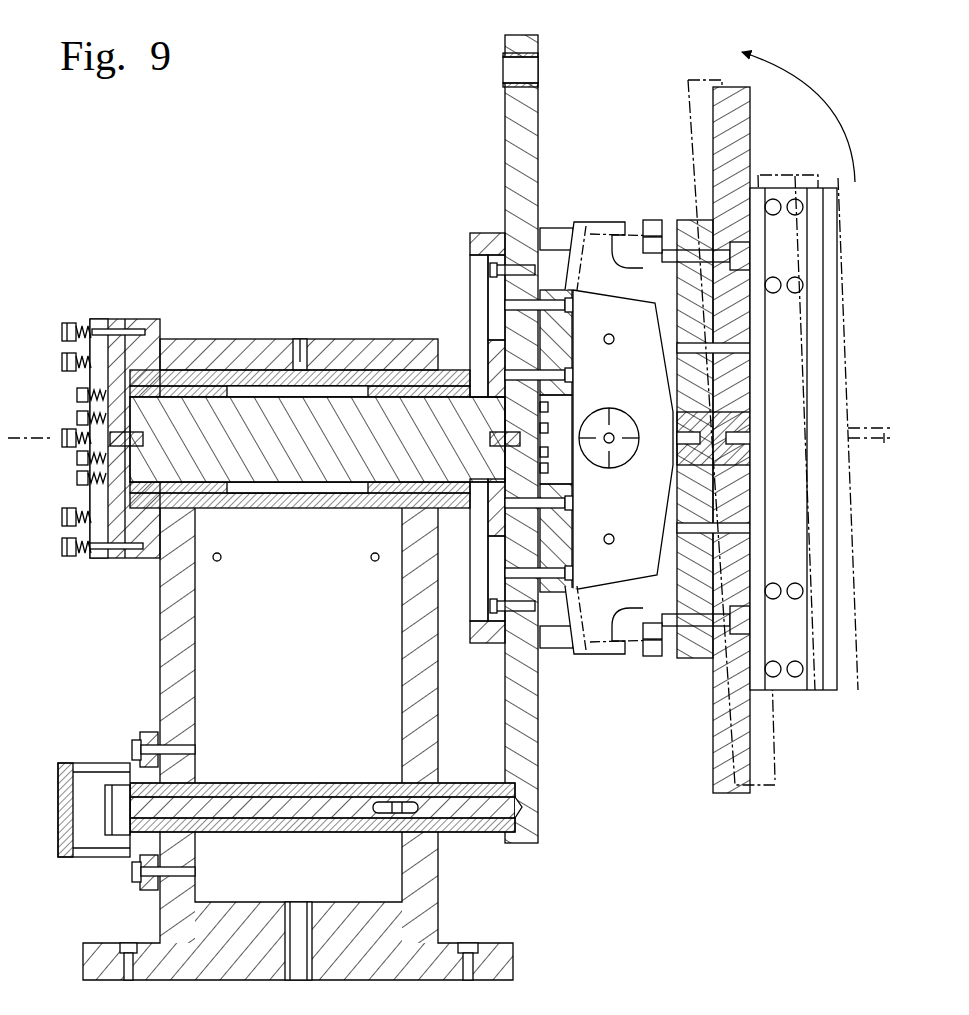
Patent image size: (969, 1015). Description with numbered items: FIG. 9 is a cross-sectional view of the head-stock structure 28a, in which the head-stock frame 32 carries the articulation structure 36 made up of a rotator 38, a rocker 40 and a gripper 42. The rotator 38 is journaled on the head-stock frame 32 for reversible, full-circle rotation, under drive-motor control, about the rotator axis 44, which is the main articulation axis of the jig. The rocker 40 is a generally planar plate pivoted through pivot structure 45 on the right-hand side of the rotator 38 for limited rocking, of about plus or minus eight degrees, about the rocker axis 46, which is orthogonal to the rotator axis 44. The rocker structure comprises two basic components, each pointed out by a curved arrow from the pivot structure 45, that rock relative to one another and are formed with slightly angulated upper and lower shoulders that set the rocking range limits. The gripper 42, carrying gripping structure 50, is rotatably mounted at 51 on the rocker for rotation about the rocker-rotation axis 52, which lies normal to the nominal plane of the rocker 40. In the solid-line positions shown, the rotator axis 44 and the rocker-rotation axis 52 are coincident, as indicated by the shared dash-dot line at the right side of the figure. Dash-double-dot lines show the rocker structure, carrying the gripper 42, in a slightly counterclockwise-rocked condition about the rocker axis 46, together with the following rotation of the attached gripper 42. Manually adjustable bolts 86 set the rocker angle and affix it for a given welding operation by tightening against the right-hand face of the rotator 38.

The head-stock structure 28a is at (262, 299).
The head-stock frame 32 is at (165, 612).
The articulation structure 36 is at (762, 399).
The rotator 38 is at (511, 161).
The rocker 40 is at (600, 222).
The gripper 42 is at (710, 110).
The rotator axis 44 is at (46, 427).
The pivot structure 45 is at (584, 574).
The rocker axis 46 is at (612, 436).
The gripping structure 50 is at (830, 246).
The rotatable mounting 51 is at (730, 406).
The rocker-rotation axis 52 is at (885, 422).
The bolts 86 is at (655, 232).